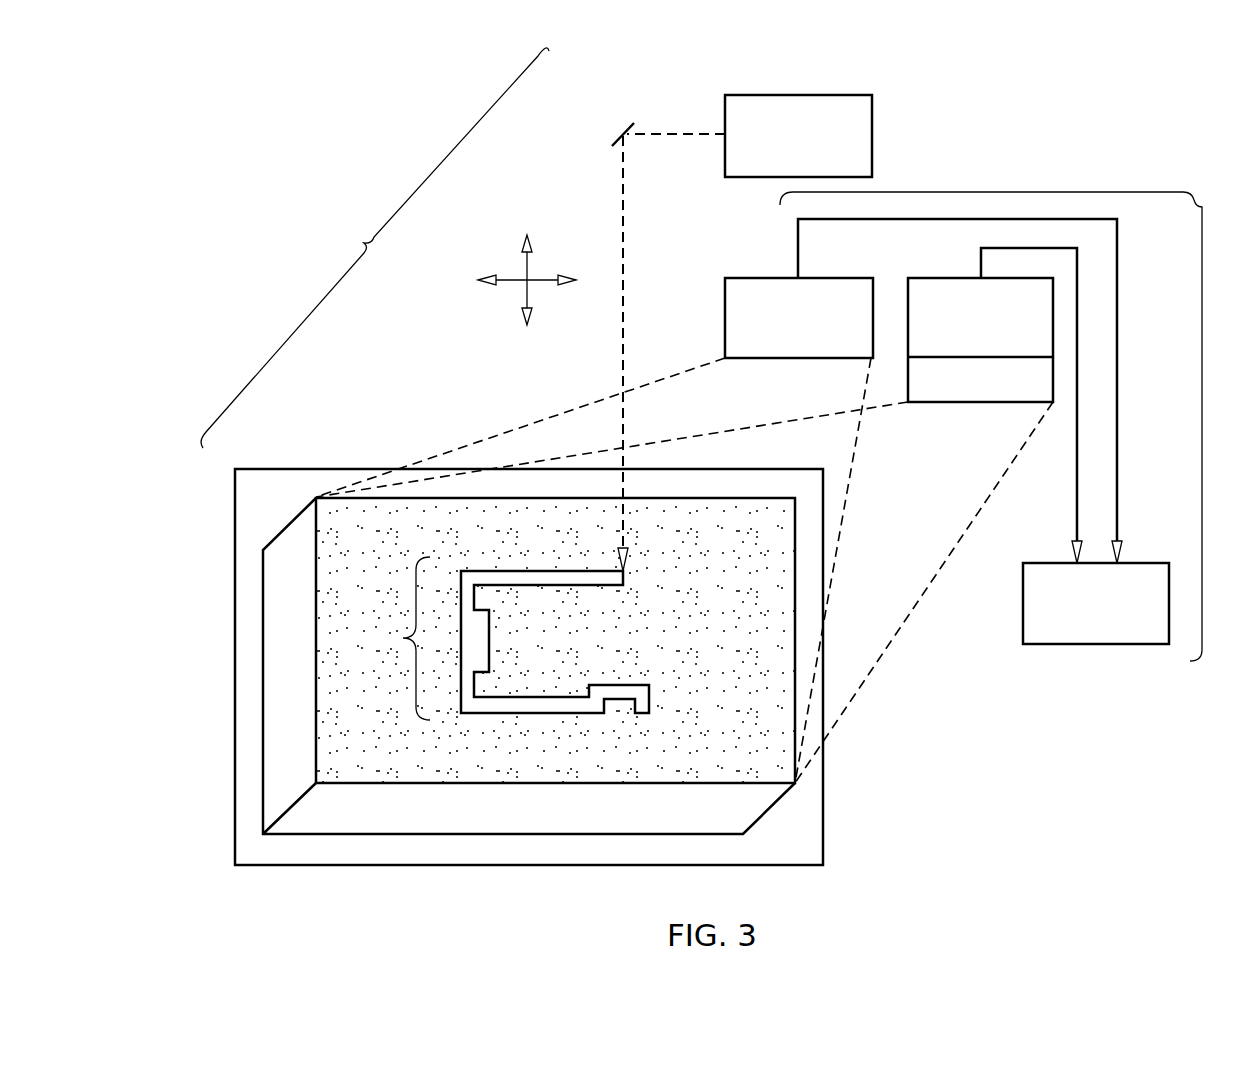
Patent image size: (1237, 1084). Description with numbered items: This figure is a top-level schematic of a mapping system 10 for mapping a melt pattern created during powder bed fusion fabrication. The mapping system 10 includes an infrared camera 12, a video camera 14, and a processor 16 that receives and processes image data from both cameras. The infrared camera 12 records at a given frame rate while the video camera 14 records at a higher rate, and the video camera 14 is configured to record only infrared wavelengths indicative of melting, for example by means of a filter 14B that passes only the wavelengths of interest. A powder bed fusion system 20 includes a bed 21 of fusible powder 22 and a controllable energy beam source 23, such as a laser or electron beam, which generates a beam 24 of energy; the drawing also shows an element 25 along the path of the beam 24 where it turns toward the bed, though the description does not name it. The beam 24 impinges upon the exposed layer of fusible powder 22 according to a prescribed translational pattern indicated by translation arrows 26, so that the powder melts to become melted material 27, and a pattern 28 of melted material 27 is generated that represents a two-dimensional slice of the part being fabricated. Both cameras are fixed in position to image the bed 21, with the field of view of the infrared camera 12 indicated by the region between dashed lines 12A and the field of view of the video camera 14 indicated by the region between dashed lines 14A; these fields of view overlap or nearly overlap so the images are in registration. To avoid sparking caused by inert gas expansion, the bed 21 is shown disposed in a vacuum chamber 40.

The mapping system 10 is at (1008, 411).
The infrared camera 12 is at (735, 277).
The dashed lines 12A is at (480, 434).
The video camera 14 is at (921, 277).
The dashed lines 14A is at (776, 424).
The filter 14B is at (953, 403).
The processor 16 is at (1098, 645).
The powder bed fusion system 20 is at (375, 248).
The bed 21 is at (273, 768).
The fusible powder 22 is at (610, 763).
The energy beam source 23 is at (872, 130).
The beam 24 is at (664, 133).
The mirror 25 is at (620, 130).
The translation arrows 26 is at (524, 266).
The melted material 27 is at (469, 695).
The pattern 28 is at (400, 638).
The vacuum chamber 40 is at (823, 818).